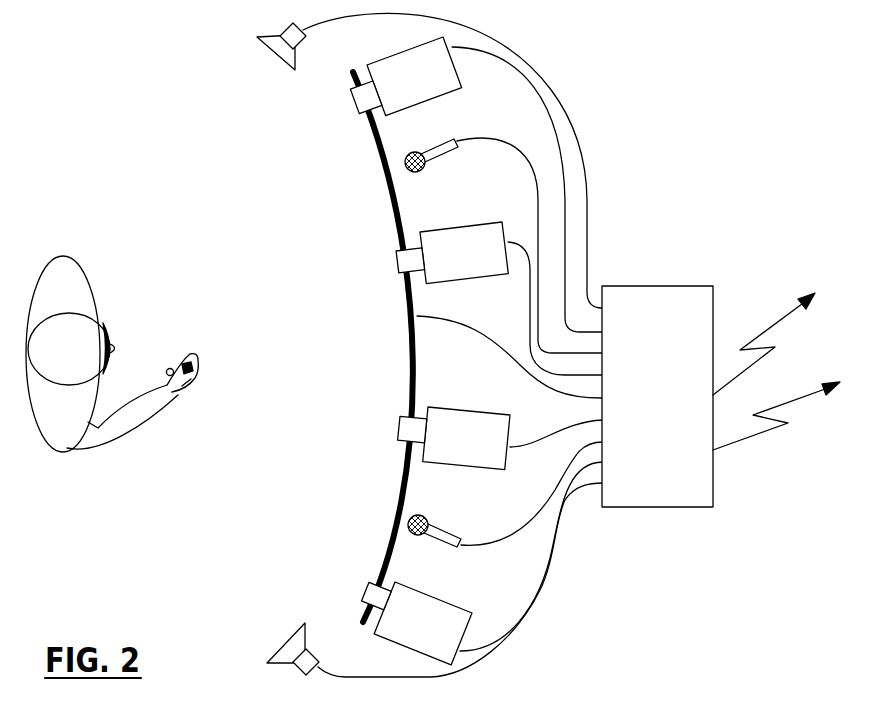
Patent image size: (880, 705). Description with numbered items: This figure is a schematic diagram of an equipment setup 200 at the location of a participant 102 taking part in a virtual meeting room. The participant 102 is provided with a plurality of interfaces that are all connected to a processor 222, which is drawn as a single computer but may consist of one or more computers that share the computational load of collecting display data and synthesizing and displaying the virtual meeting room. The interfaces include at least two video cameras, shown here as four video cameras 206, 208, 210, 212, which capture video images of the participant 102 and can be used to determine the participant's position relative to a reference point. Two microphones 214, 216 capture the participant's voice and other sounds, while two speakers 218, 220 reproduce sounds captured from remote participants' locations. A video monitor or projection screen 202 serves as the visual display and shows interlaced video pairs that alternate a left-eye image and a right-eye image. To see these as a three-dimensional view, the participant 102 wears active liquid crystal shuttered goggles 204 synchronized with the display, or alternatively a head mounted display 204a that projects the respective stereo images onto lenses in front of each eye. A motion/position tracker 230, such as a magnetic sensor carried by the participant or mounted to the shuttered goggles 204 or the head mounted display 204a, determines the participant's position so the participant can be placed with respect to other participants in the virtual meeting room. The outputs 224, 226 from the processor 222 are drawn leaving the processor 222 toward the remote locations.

The equipment setup 200 is at (696, 80).
The participant 102 is at (63, 257).
The active liquid crystal shuttered goggles 204 is at (159, 328).
The head mounted display 204a is at (105, 321).
The motion/position tracker 230 is at (168, 370).
The video monitor or projection screen 202 is at (410, 372).
The video camera 206 is at (407, 57).
The video camera 208 is at (465, 222).
The video camera 210 is at (486, 410).
The video camera 212 is at (437, 598).
The microphone 214 is at (432, 147).
The microphone 216 is at (437, 527).
The speaker 218 is at (272, 53).
The speaker 220 is at (295, 630).
The processor 222 is at (642, 286).
The wireless signal output 224 is at (768, 325).
The wireless signal output 226 is at (802, 382).